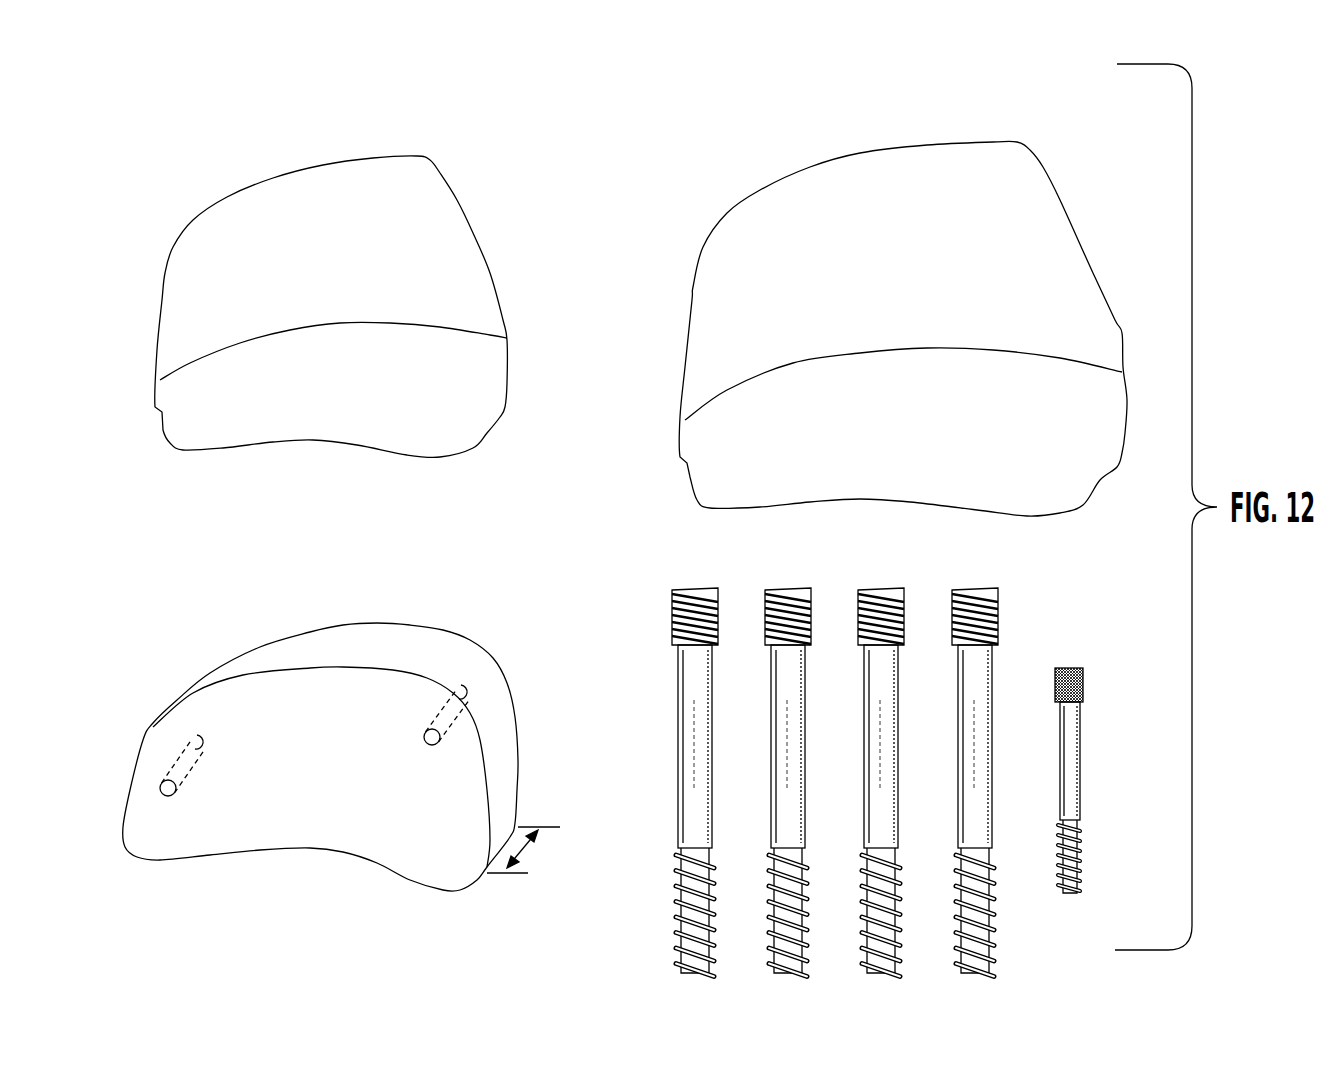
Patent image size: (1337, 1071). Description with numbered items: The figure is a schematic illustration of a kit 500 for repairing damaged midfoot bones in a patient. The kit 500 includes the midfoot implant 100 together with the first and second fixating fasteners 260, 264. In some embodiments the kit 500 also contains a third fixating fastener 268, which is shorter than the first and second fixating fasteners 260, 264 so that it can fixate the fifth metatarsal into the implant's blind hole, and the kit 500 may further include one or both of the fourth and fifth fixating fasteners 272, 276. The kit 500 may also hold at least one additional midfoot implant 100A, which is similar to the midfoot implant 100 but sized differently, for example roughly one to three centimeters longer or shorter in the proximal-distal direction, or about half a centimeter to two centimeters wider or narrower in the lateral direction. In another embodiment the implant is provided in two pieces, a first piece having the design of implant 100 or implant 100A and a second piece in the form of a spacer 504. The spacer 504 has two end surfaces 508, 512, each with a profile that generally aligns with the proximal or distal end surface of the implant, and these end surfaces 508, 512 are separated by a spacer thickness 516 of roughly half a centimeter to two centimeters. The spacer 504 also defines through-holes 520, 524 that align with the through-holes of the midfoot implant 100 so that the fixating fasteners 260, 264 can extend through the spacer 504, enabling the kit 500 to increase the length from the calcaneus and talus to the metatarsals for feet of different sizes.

The midfoot implant 100 is at (485, 165).
The kit 500 is at (208, 145).
The additional midfoot implant 100A is at (762, 151).
The spacer 504 is at (382, 638).
The end surface 508 is at (501, 648).
The end surface 512 is at (445, 833).
The spacer thickness 516 is at (523, 850).
The through-hole 520 is at (200, 733).
The through-hole 524 is at (462, 684).
The first fixating fastener 260 is at (708, 590).
The second fixating fastener 264 is at (792, 590).
The third fixating fastener 268 is at (1077, 668).
The fourth fixating fastener 272 is at (886, 590).
The fifth fixating fastener 276 is at (988, 590).